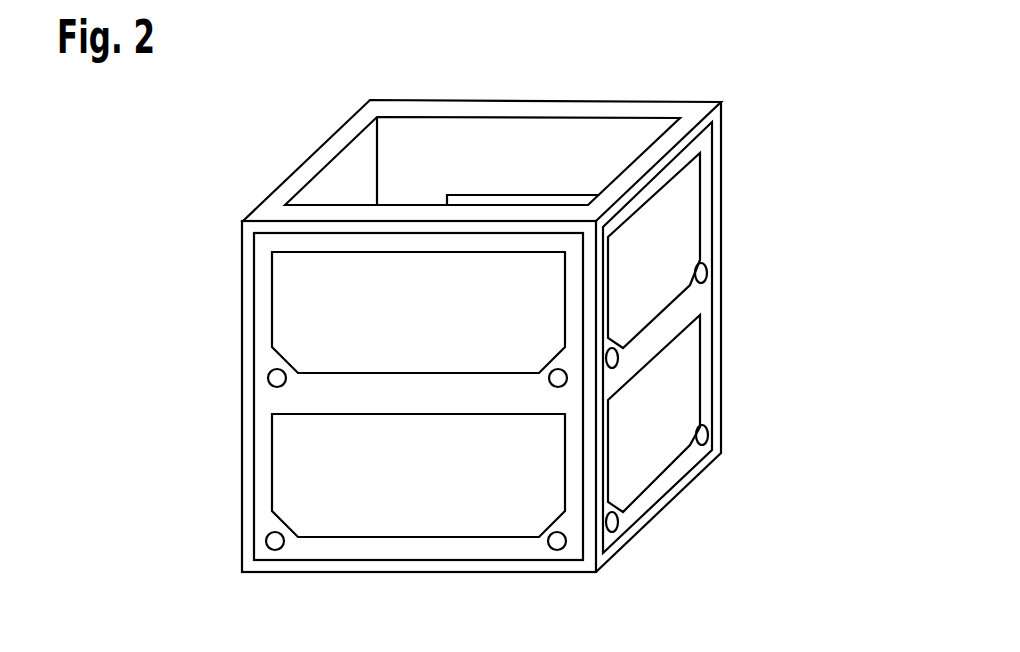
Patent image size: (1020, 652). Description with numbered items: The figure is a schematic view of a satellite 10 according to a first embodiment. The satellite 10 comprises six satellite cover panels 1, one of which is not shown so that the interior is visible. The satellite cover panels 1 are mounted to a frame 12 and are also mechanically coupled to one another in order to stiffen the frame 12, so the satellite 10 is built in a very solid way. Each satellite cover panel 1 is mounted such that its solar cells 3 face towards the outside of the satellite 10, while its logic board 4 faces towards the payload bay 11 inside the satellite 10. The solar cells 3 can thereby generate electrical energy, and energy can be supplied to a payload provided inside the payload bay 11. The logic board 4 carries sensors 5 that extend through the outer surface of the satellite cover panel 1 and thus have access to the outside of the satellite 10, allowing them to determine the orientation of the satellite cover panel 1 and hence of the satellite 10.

The satellite 10 is at (268, 144).
The satellite cover panel 1 is at (259, 297).
The solar cells 3 is at (312, 335).
The logic board 4 is at (518, 152).
The sensors 5 is at (268, 378).
The payload bay 11 is at (453, 160).
The frame 12 is at (695, 112).